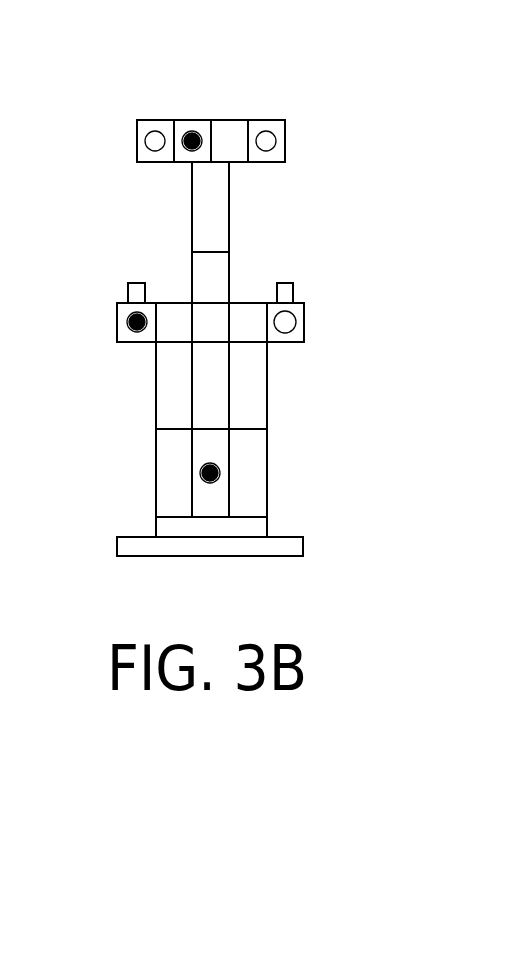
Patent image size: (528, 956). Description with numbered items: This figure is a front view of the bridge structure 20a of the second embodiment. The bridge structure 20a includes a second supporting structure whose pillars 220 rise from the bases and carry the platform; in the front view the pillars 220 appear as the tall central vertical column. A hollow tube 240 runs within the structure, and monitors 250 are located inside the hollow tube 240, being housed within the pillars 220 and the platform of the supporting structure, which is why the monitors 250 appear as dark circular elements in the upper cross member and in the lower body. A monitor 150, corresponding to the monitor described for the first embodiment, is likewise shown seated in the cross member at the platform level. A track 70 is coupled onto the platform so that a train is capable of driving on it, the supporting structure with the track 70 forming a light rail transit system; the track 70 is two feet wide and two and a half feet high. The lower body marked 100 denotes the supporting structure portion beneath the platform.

The hollow tube 240 is at (247, 121).
The monitors 250 is at (188, 165).
The pillars 220 is at (252, 209).
The monitor 150 is at (127, 322).
The track 70 is at (294, 290).
The base assembly 100 is at (332, 446).
The bridge structure 20a is at (272, 336).